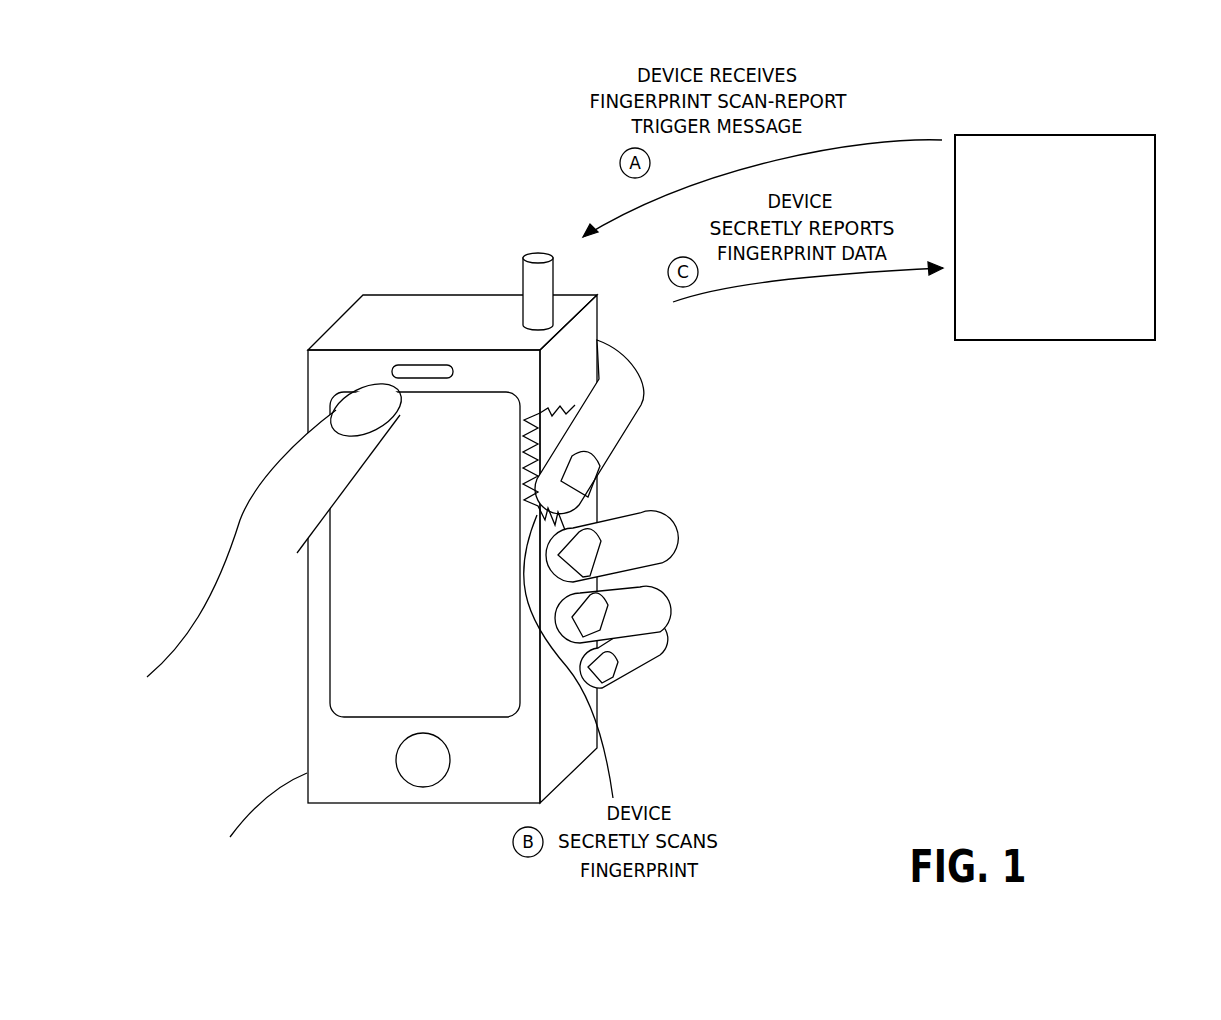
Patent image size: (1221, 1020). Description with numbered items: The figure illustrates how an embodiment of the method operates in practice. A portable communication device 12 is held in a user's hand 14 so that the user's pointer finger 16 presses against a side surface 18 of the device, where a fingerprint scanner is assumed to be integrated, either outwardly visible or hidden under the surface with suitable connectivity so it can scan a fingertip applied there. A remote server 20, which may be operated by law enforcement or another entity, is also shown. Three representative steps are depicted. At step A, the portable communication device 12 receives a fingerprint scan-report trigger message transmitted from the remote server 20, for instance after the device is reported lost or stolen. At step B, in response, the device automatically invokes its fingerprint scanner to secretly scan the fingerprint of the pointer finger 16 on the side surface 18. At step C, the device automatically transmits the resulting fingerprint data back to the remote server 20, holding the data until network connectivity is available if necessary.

The portable communication device 12 is at (488, 560).
The user's hand 14 is at (247, 507).
The pointer finger 16 is at (643, 387).
The side surface 18 is at (582, 328).
The remote server 20 is at (985, 340).